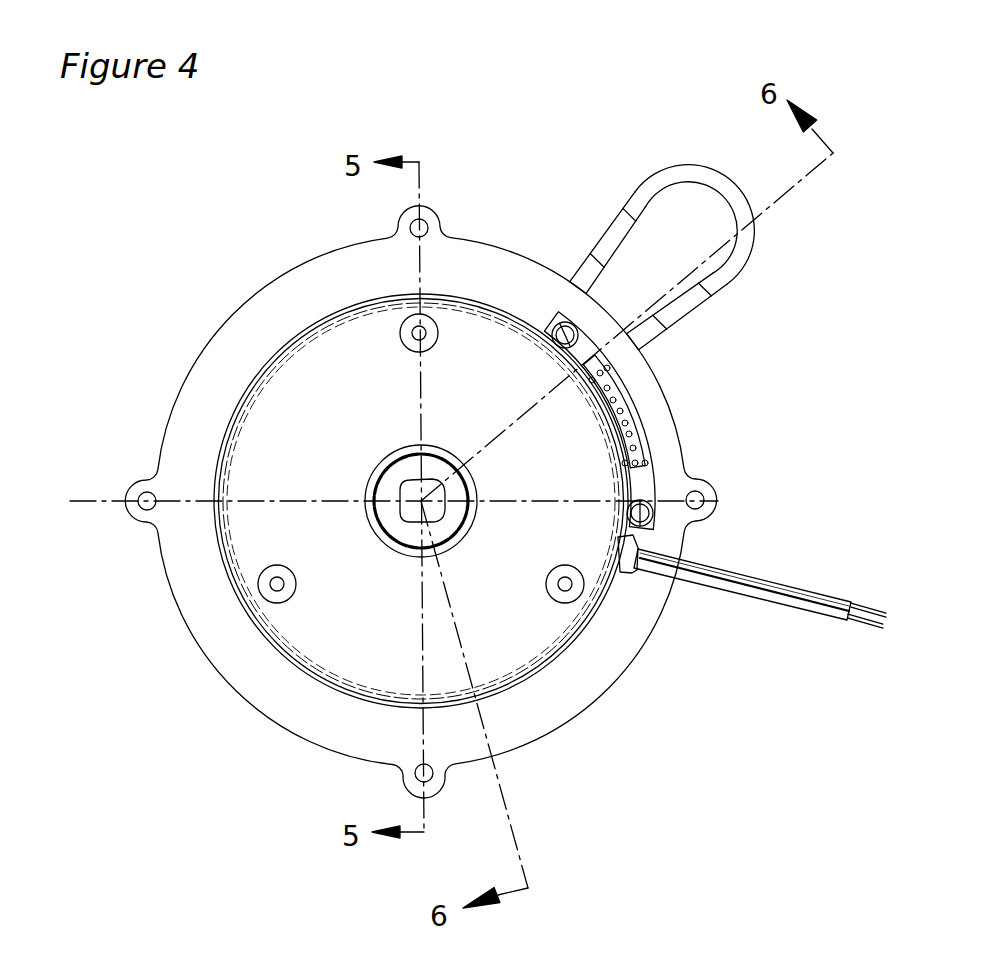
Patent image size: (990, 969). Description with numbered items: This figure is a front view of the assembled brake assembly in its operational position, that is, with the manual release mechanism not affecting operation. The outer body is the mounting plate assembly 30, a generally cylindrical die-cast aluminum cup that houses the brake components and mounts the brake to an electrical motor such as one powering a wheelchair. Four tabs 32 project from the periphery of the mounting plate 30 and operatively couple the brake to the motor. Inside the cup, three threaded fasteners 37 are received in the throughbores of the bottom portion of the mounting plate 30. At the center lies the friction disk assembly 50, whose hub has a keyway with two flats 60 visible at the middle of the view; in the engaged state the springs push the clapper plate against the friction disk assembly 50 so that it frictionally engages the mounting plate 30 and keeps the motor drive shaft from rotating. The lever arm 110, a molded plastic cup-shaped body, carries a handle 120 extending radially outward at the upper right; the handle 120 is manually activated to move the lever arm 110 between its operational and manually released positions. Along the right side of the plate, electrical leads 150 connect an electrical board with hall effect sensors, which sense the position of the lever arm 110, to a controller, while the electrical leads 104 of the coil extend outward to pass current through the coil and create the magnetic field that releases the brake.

The mounting plate assembly 30 is at (630, 664).
The tabs 32 is at (433, 214).
The threaded fasteners 37 is at (440, 333).
The friction disk assembly 50 is at (447, 527).
The flats 60 is at (398, 540).
The electrical leads 104 is at (865, 610).
The lever arm 110 is at (700, 230).
The handle 120 is at (683, 197).
The electrical leads 150 is at (622, 412).